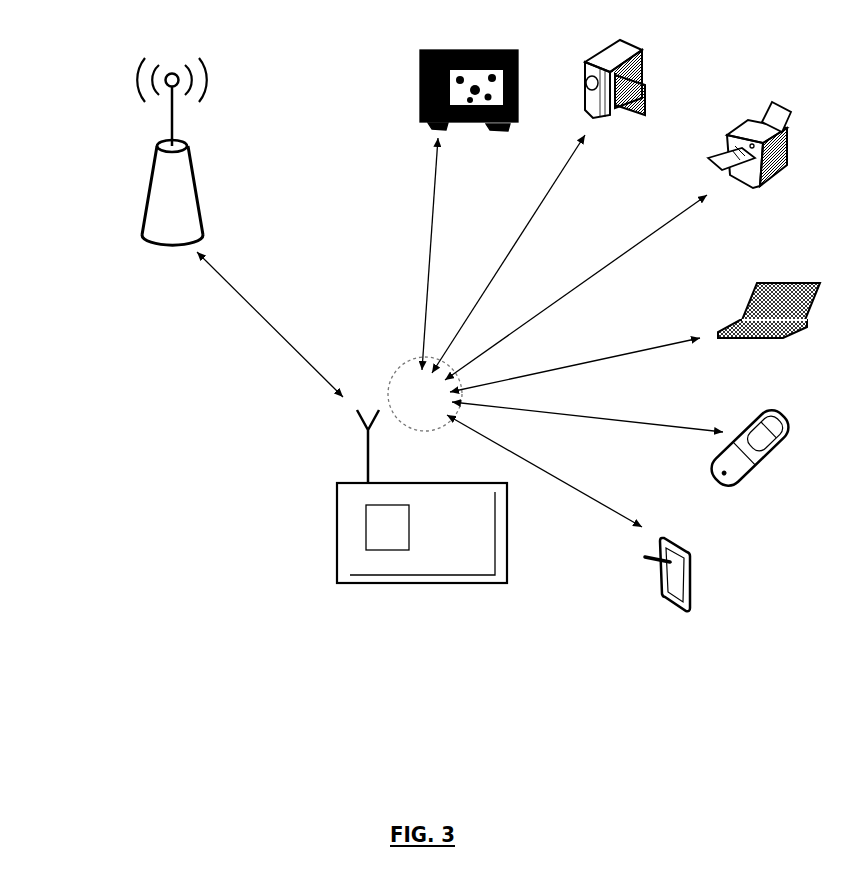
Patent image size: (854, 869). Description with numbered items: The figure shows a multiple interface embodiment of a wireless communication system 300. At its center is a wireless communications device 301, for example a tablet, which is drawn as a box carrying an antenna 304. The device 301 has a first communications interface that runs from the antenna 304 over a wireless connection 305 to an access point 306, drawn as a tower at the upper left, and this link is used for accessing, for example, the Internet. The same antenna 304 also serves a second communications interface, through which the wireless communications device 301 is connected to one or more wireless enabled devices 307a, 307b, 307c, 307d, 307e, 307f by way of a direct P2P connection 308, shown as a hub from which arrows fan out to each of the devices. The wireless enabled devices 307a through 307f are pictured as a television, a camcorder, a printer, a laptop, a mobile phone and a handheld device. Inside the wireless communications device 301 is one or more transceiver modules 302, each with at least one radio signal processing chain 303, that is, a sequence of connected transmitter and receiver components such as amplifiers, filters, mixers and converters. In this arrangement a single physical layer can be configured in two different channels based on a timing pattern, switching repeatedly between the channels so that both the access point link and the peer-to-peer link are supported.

The system 300 is at (107, 122).
The wireless communications device 301 is at (337, 535).
The transceiver module 302 is at (489, 573).
The radio signal processing chain 303 is at (403, 545).
The antenna 304 is at (366, 453).
The wireless connection 305 is at (272, 328).
The access point 306 is at (197, 188).
The wireless enabled device 307a is at (420, 96).
The wireless enabled device 307b is at (580, 58).
The wireless enabled device 307c is at (737, 122).
The wireless enabled device 307d is at (788, 282).
The wireless enabled device 307e is at (787, 440).
The wireless enabled device 307f is at (702, 585).
The direct P2P connection 308 is at (440, 405).